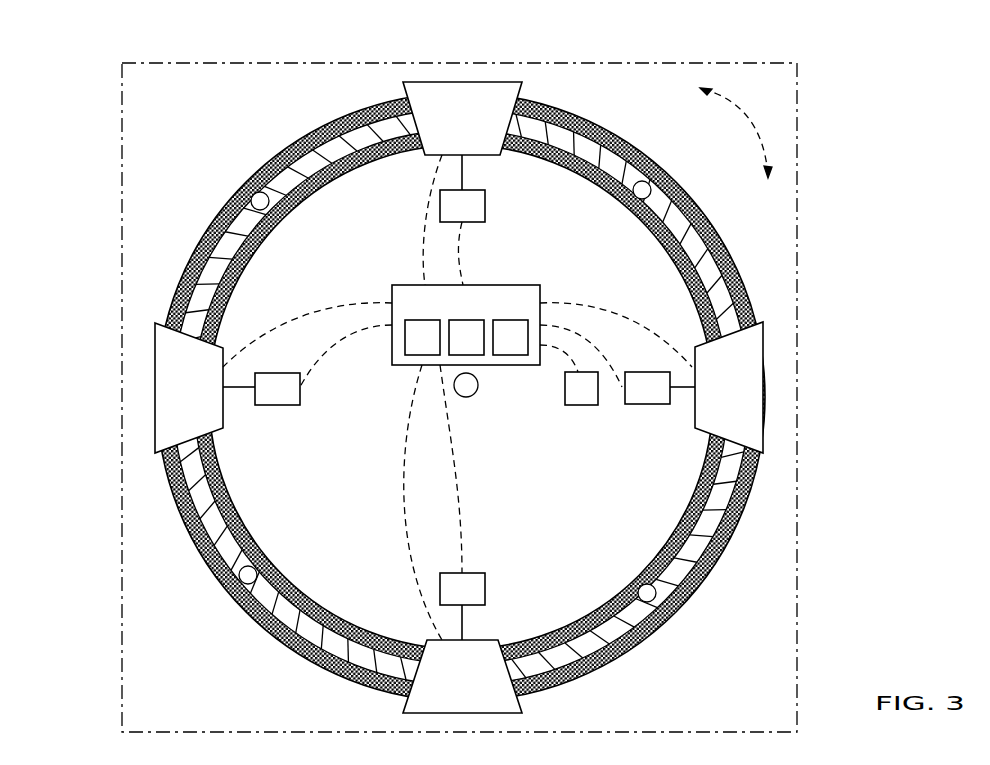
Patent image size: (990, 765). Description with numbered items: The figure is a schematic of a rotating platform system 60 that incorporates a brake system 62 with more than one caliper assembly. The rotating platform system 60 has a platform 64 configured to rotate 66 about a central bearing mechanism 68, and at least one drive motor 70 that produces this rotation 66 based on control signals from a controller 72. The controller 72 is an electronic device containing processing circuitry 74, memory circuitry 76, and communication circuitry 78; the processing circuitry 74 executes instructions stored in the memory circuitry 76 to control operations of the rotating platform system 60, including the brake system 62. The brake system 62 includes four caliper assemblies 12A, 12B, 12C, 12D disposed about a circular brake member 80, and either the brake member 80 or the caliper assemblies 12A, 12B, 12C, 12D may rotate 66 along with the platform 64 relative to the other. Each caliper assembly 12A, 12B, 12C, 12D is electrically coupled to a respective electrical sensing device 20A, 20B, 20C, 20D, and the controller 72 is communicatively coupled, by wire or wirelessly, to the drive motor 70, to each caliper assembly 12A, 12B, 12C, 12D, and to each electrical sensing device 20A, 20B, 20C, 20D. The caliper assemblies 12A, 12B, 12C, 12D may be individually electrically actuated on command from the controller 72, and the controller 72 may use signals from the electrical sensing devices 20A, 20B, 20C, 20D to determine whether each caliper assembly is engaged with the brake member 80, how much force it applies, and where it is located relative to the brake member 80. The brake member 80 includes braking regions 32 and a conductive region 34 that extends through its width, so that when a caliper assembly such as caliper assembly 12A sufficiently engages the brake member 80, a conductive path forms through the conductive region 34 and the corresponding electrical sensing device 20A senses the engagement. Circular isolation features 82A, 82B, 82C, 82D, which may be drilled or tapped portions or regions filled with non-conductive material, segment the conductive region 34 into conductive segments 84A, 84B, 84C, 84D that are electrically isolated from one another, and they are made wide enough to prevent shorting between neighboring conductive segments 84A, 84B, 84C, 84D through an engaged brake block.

The rotating platform system 60 is at (510, 32).
The brake system 62 is at (436, 32).
The platform 64 is at (797, 236).
The rotation 66 is at (732, 100).
The circular brake member 80 is at (288, 134).
The braking regions 32 is at (460, 397).
The conductive region 34 is at (320, 178).
The conductive segment 84A is at (380, 152).
The conductive segment 84B is at (700, 503).
The conductive segment 84C is at (345, 640).
The conductive segment 84D is at (222, 480).
The isolation feature 82A is at (255, 194).
The isolation feature 82B is at (648, 182).
The isolation feature 82C is at (654, 600).
The isolation feature 82D is at (241, 583).
The caliper assembly 12A is at (446, 131).
The caliper assembly 12B is at (713, 399).
The caliper assembly 12C is at (446, 691).
The caliper assembly 12D is at (173, 399).
The electrical sensing device 20A is at (447, 217).
The electrical sensing device 20B is at (632, 399).
The electrical sensing device 20C is at (447, 600).
The electrical sensing device 20D is at (262, 400).
The controller 72 is at (466, 300).
The processing circuitry 74 is at (412, 349).
The memory circuitry 76 is at (456, 349).
The communication circuitry 78 is at (500, 349).
The central bearing mechanism 68 is at (466, 397).
The drive motor 70 is at (581, 405).